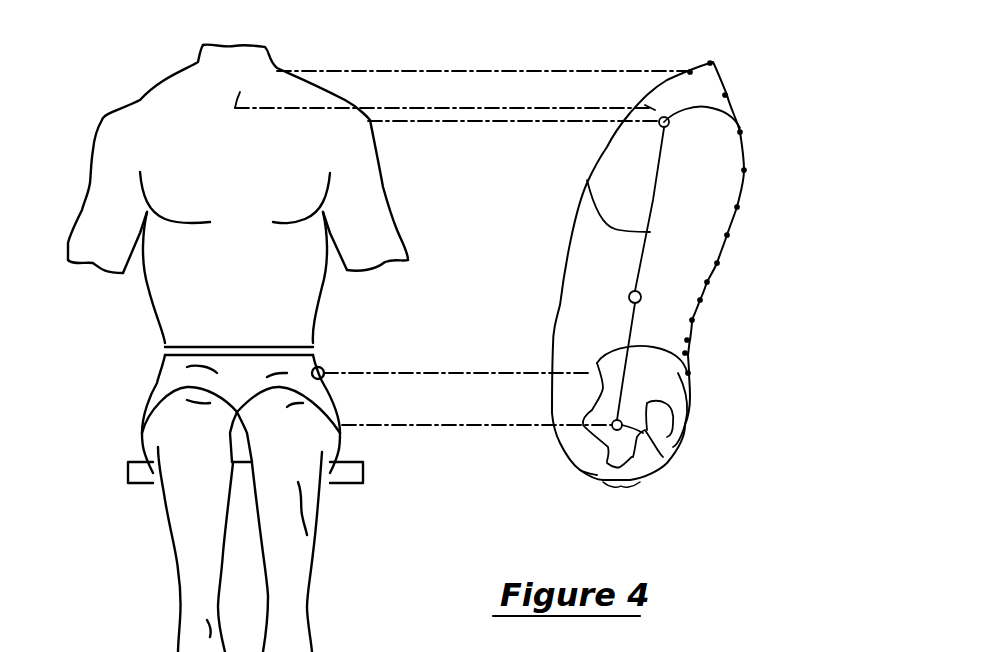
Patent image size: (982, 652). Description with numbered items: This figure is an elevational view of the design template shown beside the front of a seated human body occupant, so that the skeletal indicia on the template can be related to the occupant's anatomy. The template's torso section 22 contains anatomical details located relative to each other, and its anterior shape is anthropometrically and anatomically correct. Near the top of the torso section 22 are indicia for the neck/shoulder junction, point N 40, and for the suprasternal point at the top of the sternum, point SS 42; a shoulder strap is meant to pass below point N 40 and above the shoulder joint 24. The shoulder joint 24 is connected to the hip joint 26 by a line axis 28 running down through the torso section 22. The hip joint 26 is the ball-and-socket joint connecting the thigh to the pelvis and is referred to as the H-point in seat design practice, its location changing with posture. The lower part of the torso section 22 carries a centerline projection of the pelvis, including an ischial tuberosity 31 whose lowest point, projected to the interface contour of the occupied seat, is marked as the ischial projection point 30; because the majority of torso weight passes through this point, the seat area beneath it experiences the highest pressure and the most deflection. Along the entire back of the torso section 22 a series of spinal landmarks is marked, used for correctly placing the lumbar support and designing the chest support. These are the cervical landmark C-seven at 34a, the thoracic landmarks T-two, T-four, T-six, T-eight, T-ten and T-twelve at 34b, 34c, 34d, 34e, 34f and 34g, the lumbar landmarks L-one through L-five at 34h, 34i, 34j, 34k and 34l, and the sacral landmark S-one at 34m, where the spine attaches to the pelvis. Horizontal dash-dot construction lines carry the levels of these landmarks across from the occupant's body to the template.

The torso section 22 is at (590, 300).
The shoulder joint 24 is at (740, 128).
The hip joint 26 is at (667, 463).
The line axis 28 is at (587, 183).
The point I_D^0 30 is at (621, 501).
The ischial tuberosity 31 is at (590, 473).
The point N 40 is at (690, 72).
The point SS 42 is at (650, 108).
The spinal landmark C7 34a is at (710, 63).
The spinal landmark T2 34b is at (725, 95).
The spinal landmark T4 34c is at (740, 132).
The spinal landmark T6 34d is at (744, 170).
The spinal landmark T8 34e is at (737, 207).
The spinal landmark T10 34f is at (727, 235).
The spinal landmark T12 34g is at (717, 263).
The spinal landmark L1 34h is at (707, 282).
The spinal landmark L2 34i is at (700, 300).
The spinal landmark L3 34j is at (692, 320).
The spinal landmark L4 34k is at (687, 340).
The spinal landmark L5 34l is at (685, 353).
The spinal landmark S1 34m is at (688, 373).